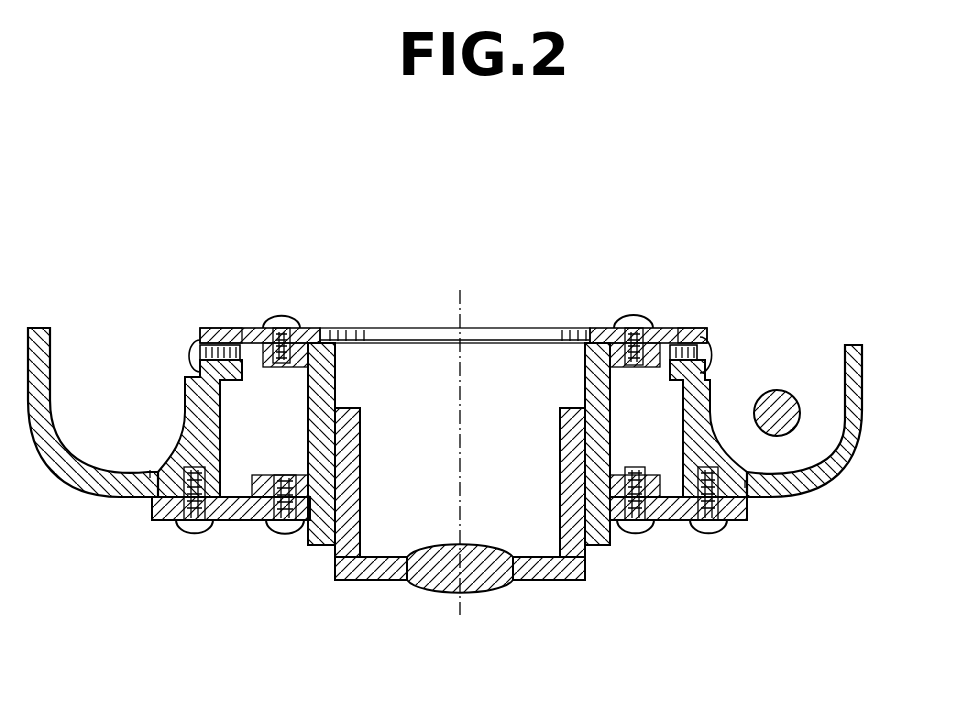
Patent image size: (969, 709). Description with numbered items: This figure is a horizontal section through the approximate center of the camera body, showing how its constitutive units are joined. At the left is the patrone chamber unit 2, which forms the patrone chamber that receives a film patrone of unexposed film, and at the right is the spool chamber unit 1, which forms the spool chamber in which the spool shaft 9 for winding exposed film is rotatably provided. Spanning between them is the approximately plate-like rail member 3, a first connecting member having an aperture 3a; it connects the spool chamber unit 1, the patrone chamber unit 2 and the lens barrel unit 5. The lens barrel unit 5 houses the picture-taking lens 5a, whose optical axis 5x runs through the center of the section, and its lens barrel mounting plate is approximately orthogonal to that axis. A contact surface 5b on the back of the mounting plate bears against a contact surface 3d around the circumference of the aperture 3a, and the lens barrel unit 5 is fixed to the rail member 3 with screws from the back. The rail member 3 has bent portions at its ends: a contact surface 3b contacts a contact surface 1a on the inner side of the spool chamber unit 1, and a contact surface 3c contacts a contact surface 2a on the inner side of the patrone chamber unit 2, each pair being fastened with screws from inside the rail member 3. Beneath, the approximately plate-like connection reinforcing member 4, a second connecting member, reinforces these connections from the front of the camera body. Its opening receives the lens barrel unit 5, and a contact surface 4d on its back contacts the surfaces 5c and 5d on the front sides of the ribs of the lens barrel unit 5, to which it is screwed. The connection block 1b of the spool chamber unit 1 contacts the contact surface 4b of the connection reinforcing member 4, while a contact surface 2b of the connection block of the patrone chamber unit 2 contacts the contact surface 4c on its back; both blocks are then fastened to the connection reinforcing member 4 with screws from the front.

The spool chamber unit 1 is at (855, 373).
The contact surface 1a is at (680, 337).
The connection block 1b is at (738, 498).
The patrone chamber unit 2 is at (44, 338).
The contact surface 2a is at (236, 338).
The contact surface 2b is at (170, 498).
The rail member 3 is at (604, 336).
The aperture 3a is at (548, 337).
The contact surface 3b is at (696, 338).
The contact surface 3c is at (213, 338).
The contact surface 3d is at (338, 393).
The connection reinforcing member 4 is at (728, 515).
The contact surface 4b is at (738, 490).
The contact surface 4c is at (157, 478).
The contact surface 4d is at (257, 490).
The lens barrel unit 5 is at (595, 536).
The picture-taking lens 5a is at (478, 574).
The contact surface 5b is at (317, 345).
The surface 5c is at (656, 515).
The surface 5d is at (250, 536).
The optical axis 5x is at (456, 604).
The spool shaft 9 is at (783, 400).